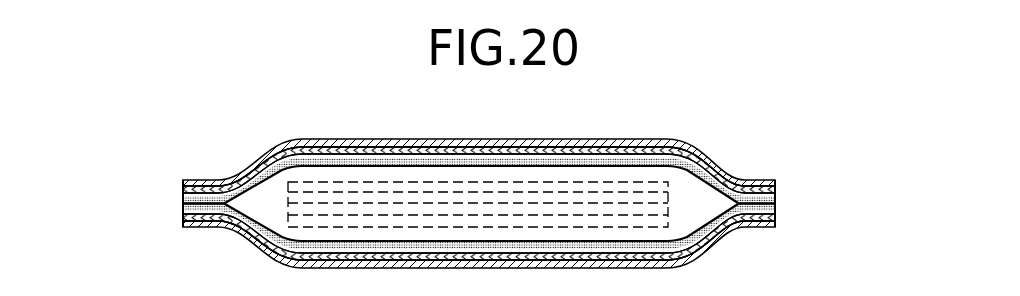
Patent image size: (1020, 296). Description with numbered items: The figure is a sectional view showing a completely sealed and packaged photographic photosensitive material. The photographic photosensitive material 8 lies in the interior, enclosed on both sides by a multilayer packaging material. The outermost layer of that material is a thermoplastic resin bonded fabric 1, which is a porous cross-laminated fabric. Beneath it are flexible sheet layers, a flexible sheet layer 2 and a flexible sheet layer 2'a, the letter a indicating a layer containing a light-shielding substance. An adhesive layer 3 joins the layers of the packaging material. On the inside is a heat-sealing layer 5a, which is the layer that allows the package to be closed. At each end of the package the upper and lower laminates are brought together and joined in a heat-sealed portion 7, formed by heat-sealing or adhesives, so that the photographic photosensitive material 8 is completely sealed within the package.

The thermoplastic resin bonded fabric 1 is at (463, 140).
The flexible sheet layer 2 is at (479, 176).
The flexible sheet layer containing a light-shielding substance 2'a is at (479, 173).
The adhesive layer 3 is at (504, 147).
The heat-sealing layer 5a is at (696, 176).
The heat-sealed portion 7 is at (778, 203).
The photographic photosensitive material 8 is at (403, 182).